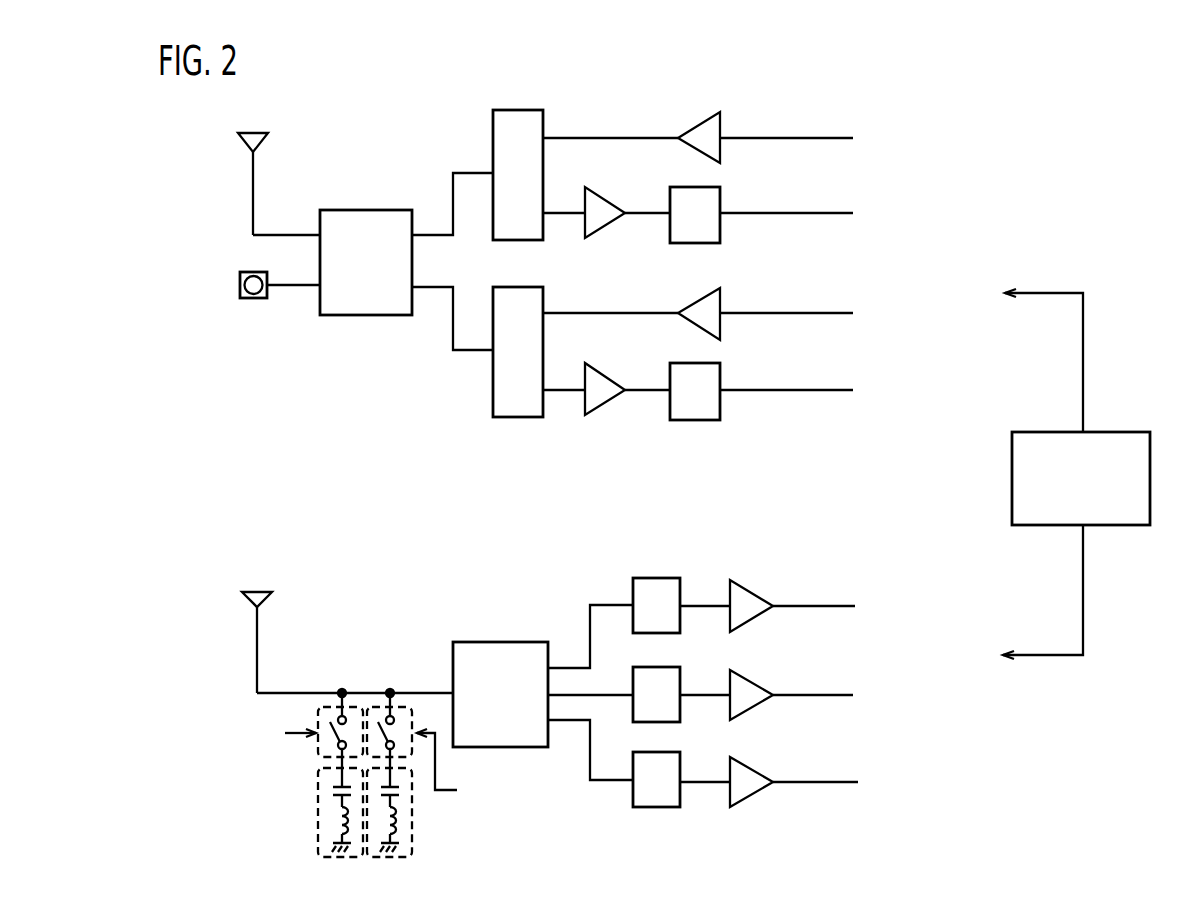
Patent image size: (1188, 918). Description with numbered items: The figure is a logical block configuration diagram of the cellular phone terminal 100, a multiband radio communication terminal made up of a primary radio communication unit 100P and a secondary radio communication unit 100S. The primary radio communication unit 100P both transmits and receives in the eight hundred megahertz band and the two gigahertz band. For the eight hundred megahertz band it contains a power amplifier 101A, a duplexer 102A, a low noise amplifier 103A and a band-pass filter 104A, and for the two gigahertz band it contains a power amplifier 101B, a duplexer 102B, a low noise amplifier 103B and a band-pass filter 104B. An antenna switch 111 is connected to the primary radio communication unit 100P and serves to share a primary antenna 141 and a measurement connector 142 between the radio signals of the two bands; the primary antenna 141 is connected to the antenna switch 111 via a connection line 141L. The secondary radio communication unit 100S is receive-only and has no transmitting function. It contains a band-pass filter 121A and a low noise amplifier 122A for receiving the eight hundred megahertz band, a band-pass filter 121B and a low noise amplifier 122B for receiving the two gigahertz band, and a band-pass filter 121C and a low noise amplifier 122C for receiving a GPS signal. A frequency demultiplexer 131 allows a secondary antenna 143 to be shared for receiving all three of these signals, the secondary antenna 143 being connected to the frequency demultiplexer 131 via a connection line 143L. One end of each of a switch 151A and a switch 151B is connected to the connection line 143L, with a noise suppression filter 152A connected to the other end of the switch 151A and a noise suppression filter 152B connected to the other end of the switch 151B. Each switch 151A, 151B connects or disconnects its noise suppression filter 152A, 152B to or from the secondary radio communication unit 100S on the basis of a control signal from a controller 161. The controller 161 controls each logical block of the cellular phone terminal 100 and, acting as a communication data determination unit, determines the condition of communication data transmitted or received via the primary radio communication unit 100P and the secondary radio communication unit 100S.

The cellular phone terminal 100 is at (1060, 112).
The primary radio communication unit 100P is at (650, 105).
The secondary radio communication unit 100S is at (607, 568).
The power amplifier 101A is at (721, 125).
The power amplifier 101B is at (721, 300).
The duplexer 102A is at (543, 128).
The duplexer 102B is at (543, 305).
The low noise amplifier 103A is at (605, 194).
The low noise amplifier 103B is at (605, 370).
The band-pass filter 104A is at (721, 202).
The band-pass filter 104B is at (721, 379).
The antenna switch 111 is at (365, 209).
The band-pass filter 121A is at (682, 593).
The band-pass filter 121B is at (682, 685).
The band-pass filter 121C is at (682, 770).
The low noise amplifier 122A is at (750, 592).
The low noise amplifier 122B is at (750, 682).
The low noise amplifier 122C is at (750, 768).
The frequency demultiplexer 131 is at (501, 641).
The primary antenna 141 is at (238, 145).
The connection line 141L is at (290, 233).
The measurement connector 142 is at (240, 285).
The secondary antenna 143 is at (242, 604).
The connection line 143L is at (292, 692).
The switch 151A is at (401, 706).
The switch 151B is at (358, 706).
The noise suppression filter 152A is at (412, 849).
The noise suppression filter 152B is at (318, 849).
The controller 161 is at (1121, 431).